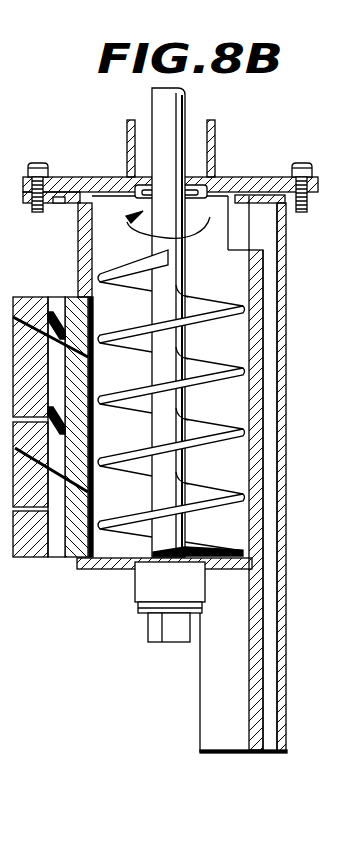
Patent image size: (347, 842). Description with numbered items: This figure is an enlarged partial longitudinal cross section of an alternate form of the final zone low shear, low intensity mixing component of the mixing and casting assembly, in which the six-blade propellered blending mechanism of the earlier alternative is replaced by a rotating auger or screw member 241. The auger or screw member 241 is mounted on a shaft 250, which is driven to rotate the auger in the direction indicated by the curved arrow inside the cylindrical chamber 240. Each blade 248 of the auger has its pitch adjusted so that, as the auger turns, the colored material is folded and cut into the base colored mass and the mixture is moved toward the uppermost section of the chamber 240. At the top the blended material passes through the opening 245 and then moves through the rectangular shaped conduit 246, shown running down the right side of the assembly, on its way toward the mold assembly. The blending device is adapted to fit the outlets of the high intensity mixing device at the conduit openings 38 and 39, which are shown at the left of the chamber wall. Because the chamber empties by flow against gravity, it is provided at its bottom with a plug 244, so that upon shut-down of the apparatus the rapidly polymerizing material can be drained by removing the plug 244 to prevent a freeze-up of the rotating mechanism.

The shaft 250 is at (186, 100).
The opening 245 is at (237, 230).
The chamber 240 is at (235, 275).
The blade 248 is at (245, 369).
The auger or screw member 241 is at (203, 431).
The plug 244 is at (177, 636).
The rectangular shaped conduit 246 is at (270, 742).
The conduit opening 39 is at (38, 357).
The conduit opening 38 is at (37, 495).